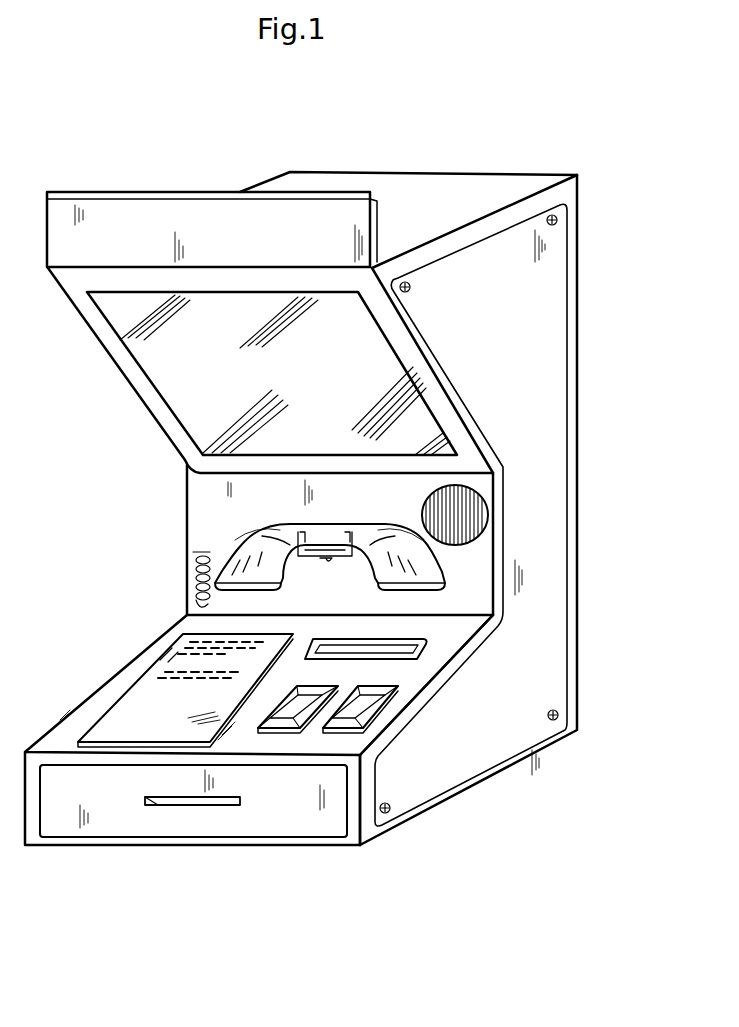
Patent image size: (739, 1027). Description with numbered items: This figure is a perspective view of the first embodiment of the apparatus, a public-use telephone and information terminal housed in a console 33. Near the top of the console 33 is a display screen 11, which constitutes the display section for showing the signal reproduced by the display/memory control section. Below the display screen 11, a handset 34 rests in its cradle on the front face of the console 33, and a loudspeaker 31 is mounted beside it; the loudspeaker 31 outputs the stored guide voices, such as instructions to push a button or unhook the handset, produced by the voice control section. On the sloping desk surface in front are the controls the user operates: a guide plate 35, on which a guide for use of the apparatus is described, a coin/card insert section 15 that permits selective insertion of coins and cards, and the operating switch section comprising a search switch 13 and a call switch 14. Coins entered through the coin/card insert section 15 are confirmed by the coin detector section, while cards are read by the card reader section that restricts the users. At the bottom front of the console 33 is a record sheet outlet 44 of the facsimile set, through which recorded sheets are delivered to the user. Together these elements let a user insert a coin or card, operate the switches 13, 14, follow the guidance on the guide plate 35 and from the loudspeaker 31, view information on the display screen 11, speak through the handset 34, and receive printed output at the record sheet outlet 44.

The display screen 11 is at (170, 392).
The search switch 13 is at (357, 705).
The call switch 14 is at (283, 740).
The coin/card insert section 15 is at (420, 650).
The loudspeaker 31 is at (473, 520).
The console 33 is at (557, 385).
The handset 34 is at (327, 532).
The guide plate 35 is at (145, 687).
The record sheet outlet 44 is at (185, 807).